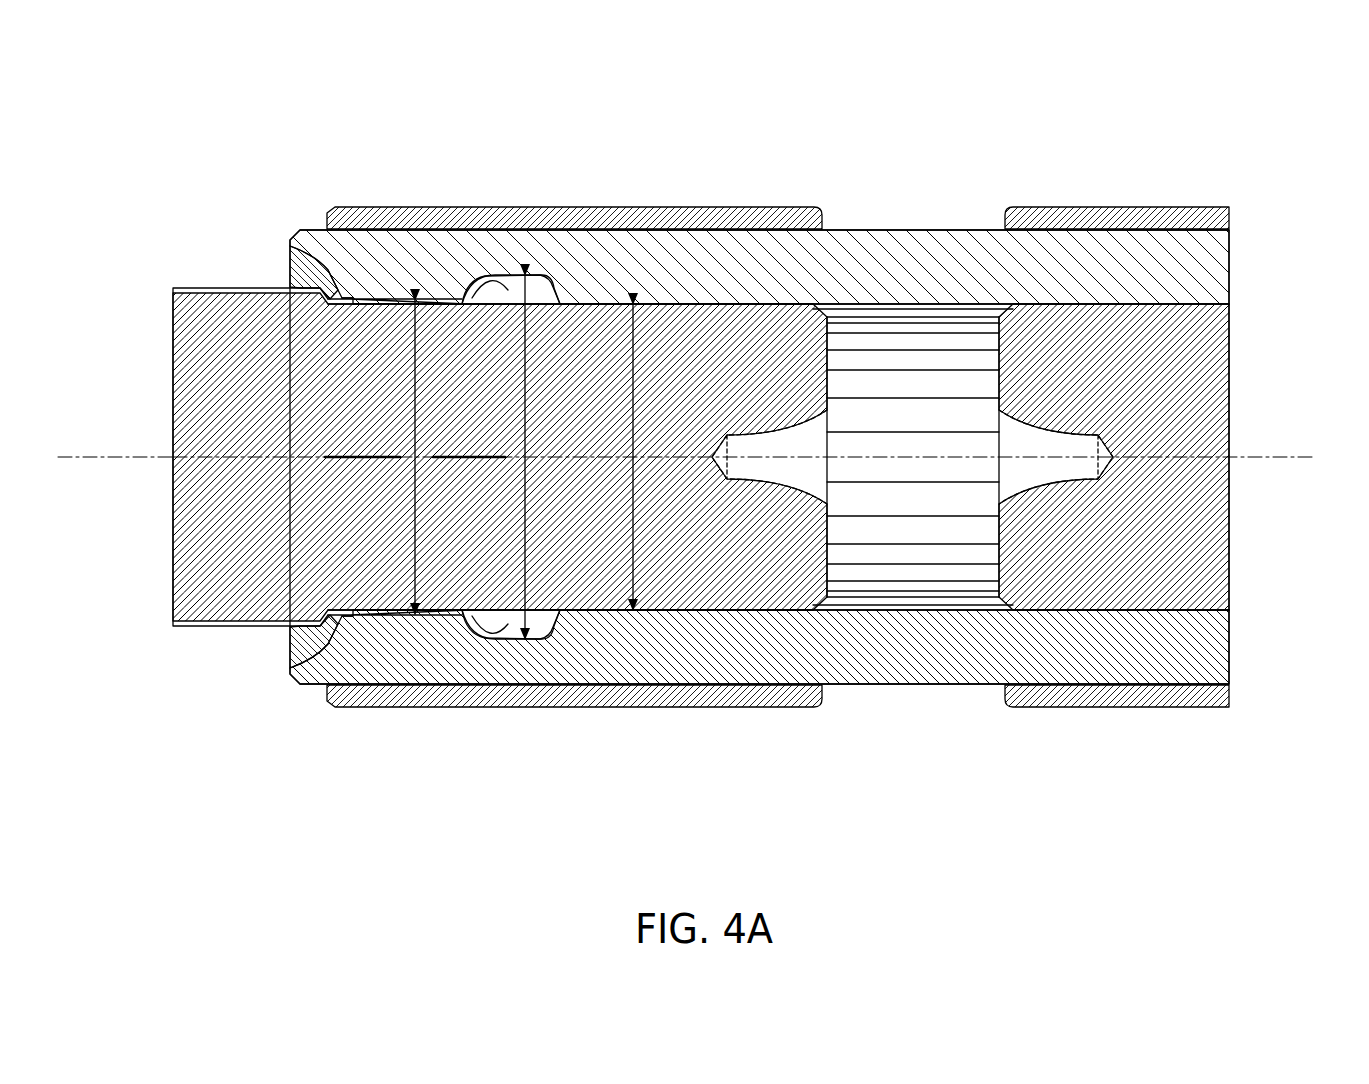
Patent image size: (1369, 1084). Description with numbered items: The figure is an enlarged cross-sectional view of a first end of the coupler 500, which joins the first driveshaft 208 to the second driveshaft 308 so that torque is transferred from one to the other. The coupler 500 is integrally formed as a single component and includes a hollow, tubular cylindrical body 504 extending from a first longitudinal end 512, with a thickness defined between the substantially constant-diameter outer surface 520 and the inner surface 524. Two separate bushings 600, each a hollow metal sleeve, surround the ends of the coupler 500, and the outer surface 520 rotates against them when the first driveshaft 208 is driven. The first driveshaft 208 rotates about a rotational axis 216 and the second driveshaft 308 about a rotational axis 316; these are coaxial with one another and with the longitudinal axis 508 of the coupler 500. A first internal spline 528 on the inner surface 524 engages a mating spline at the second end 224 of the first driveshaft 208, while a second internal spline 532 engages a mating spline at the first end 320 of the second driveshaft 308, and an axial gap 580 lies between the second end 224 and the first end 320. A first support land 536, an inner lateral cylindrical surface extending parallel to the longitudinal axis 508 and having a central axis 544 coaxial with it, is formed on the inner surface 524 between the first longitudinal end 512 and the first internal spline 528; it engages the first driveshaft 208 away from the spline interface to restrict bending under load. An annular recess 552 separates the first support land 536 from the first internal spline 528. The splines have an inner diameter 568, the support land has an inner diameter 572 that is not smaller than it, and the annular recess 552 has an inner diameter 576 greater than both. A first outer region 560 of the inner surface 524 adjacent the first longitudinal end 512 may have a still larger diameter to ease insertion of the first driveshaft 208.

The coupler 500 is at (372, 108).
The first longitudinal end 512 is at (290, 240).
The first outer region 560 is at (292, 270).
The first support land 536 is at (372, 300).
The annular recess 552 is at (462, 298).
The longitudinal axis 508 is at (565, 455).
The bushing 600 is at (625, 207).
The outer surface 520 is at (713, 229).
The first internal spline 528 is at (842, 360).
The cylindrical body 504 is at (912, 228).
The second internal spline 532 is at (983, 360).
The rotational axis 216 is at (92, 457).
The rotational axis 316 is at (1306, 457).
The first driveshaft 208 is at (173, 540).
The second driveshaft 308 is at (1229, 540).
The central axis 544 is at (347, 460).
The inner diameter 572 is at (413, 567).
The inner diameter 576 is at (527, 563).
The inner diameter 568 is at (630, 563).
The inner surface 524 is at (683, 607).
The second end 224 is at (830, 557).
The axial gap 580 is at (920, 553).
The first end 320 is at (998, 553).